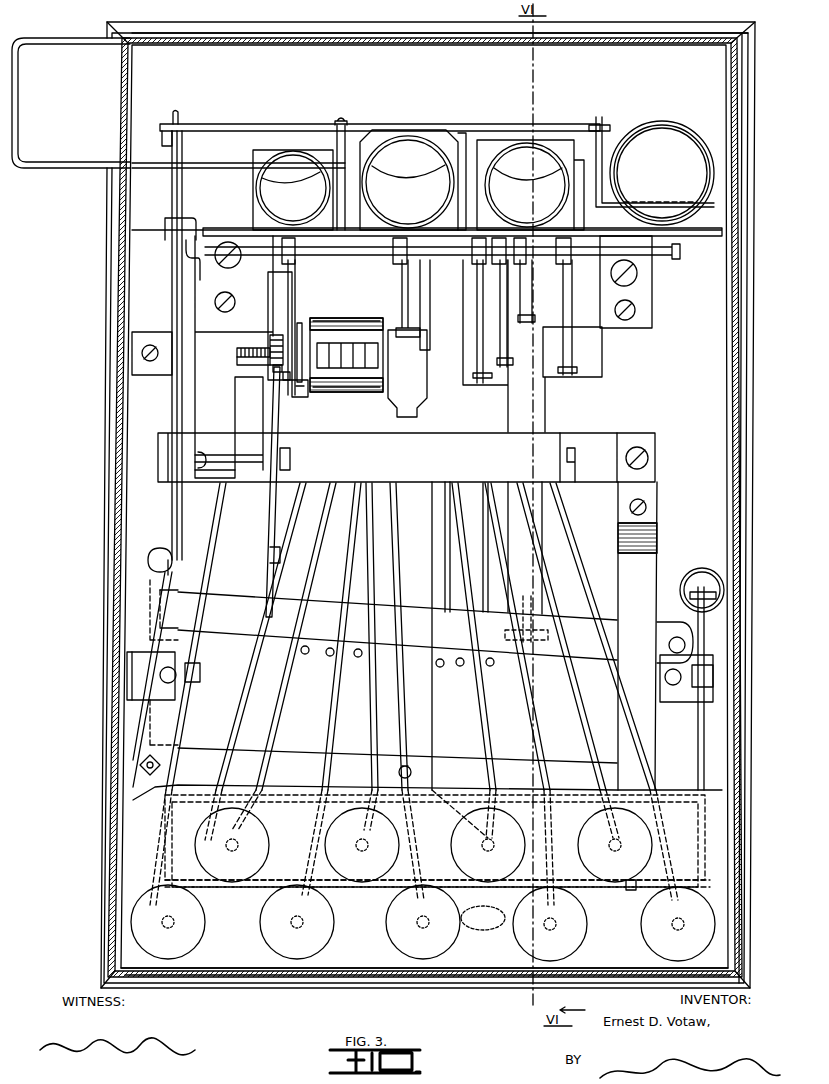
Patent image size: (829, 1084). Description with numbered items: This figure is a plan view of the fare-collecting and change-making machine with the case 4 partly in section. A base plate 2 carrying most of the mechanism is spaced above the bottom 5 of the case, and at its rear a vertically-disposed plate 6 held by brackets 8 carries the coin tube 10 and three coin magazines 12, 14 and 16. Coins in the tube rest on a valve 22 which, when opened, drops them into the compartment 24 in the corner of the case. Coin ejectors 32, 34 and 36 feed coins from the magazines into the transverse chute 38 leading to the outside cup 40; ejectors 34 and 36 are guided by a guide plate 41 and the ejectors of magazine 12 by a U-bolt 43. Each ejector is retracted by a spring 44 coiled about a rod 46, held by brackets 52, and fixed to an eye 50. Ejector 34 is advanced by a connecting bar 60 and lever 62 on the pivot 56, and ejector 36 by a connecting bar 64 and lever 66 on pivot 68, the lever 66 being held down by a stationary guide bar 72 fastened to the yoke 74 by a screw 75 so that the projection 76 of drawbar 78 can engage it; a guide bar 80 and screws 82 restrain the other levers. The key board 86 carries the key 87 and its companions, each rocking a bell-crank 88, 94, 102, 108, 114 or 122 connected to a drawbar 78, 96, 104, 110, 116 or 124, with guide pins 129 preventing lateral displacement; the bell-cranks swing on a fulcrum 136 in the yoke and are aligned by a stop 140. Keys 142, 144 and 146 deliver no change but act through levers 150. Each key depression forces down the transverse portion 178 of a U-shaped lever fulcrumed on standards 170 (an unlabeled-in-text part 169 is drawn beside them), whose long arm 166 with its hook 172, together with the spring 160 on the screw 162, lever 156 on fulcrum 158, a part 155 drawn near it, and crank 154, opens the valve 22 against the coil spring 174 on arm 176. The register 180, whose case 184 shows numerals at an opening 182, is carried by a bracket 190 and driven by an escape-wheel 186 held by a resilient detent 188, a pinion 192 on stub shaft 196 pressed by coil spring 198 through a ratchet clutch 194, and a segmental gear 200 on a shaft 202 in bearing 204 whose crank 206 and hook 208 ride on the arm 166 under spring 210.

The base plate 2 is at (549, 176).
The case 4 is at (103, 514).
The bottom of the case 5 is at (110, 471).
The vertically-disposed plate 6 is at (226, 230).
The brackets 8 is at (650, 300).
The coin tube 10 is at (660, 120).
The coin magazine 12 is at (524, 144).
The coin magazine 14 is at (408, 135).
The coin magazine 16 is at (292, 150).
The valve 22 is at (659, 182).
The compartment 24 is at (722, 116).
The coin ejector 32 is at (477, 381).
The coin ejector 34 is at (380, 281).
The coin ejector 36 is at (308, 290).
The chute 38 is at (353, 55).
The cup 40 is at (178, 103).
The guide plate 41 is at (234, 353).
The U-bolt 43 is at (523, 586).
The spring 44 is at (292, 302).
The rod 46 is at (652, 280).
The eye 50 is at (596, 372).
The brackets 52 is at (217, 242).
The pivot 56 is at (140, 762).
The connecting bar 60 is at (428, 420).
The lever 62 is at (404, 782).
The connecting bar 64 is at (272, 523).
The lever 66 is at (388, 625).
The pivot 68 is at (718, 648).
The stationary guide bar 72 is at (125, 657).
The yoke 74 is at (406, 457).
The screw 75 is at (205, 452).
The projection 76 is at (480, 660).
The drawbar 78 is at (490, 600).
The guide bar 80 is at (650, 565).
The screws 82 is at (648, 507).
The key board 86 is at (427, 968).
The key 87 is at (270, 840).
The bell-crank 88 is at (535, 748).
The bell-crank 94 is at (435, 770).
The drawbar 96 is at (396, 650).
The bell-crank 102 is at (325, 777).
The draw bar 104 is at (348, 648).
The bell-crank 108 is at (487, 770).
The draw bar 110 is at (442, 600).
The bell-crank 114 is at (380, 777).
The draw bar 116 is at (360, 646).
The bell-crank 122 is at (310, 717).
The draw bar 124 is at (318, 680).
The guide pins 129 is at (300, 656).
The fulcrum 136 is at (565, 452).
The stop 140 is at (560, 487).
The key 142 is at (705, 940).
The key 144 is at (630, 885).
The key 146 is at (190, 948).
The levers 150 is at (235, 715).
The crank 154 is at (604, 120).
The bracket 155 is at (596, 116).
The lever 156 is at (468, 124).
The fulcrum 158 is at (343, 118).
The spring 160 is at (177, 112).
The screw 162 is at (155, 559).
The long arm 166 is at (190, 145).
The block 169 is at (128, 663).
The standards 170 is at (128, 690).
The hook 172 is at (166, 140).
The coil spring 174 is at (725, 585).
The arm 176 is at (705, 735).
The rear transverse portion 178 is at (483, 918).
The register 180 is at (322, 388).
The opening 182 is at (357, 368).
The case of the register 184 is at (371, 368).
The escape-wheel 186 is at (297, 326).
The resilient detent 188 is at (302, 398).
The bracket 190 is at (133, 353).
The pinion 192 is at (272, 340).
The ratchet clutch 194 is at (282, 372).
The stub shaft 196 is at (240, 351).
The coil spring 198 is at (242, 365).
The segmental gear 200 is at (283, 458).
The shaft 202 is at (222, 482).
The bearing 204 is at (256, 480).
The crank 206 is at (180, 282).
The hook 208 is at (165, 226).
The spring 210 is at (178, 257).